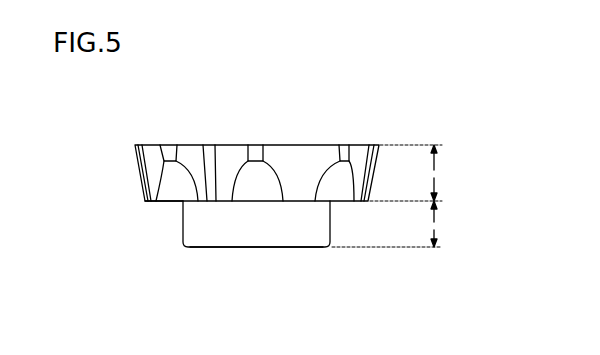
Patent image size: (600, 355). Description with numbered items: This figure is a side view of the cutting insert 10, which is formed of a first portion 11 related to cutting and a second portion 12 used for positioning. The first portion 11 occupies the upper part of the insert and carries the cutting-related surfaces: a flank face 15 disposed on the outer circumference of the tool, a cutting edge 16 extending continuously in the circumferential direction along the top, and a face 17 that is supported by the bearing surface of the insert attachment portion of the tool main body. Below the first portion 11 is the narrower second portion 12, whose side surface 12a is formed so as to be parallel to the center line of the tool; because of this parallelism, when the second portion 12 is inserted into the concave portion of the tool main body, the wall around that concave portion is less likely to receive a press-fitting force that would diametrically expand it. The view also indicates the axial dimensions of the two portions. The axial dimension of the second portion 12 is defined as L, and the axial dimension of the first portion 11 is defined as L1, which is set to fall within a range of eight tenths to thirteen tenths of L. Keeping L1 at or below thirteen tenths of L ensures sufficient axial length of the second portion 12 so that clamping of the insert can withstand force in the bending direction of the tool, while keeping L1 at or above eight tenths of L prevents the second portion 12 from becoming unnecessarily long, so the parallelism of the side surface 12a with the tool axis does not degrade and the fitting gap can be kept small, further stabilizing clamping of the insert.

The cutting insert 10 is at (278, 145).
The first portion 11 is at (128, 145).
The second portion 12 is at (130, 201).
The side surface 12a is at (253, 233).
The flank face 15 is at (317, 155).
The cutting edge 16 is at (230, 143).
The face 17 is at (165, 202).
The axial dimension of first portion L1 is at (434, 174).
The axial dimension of second portion L is at (434, 226).